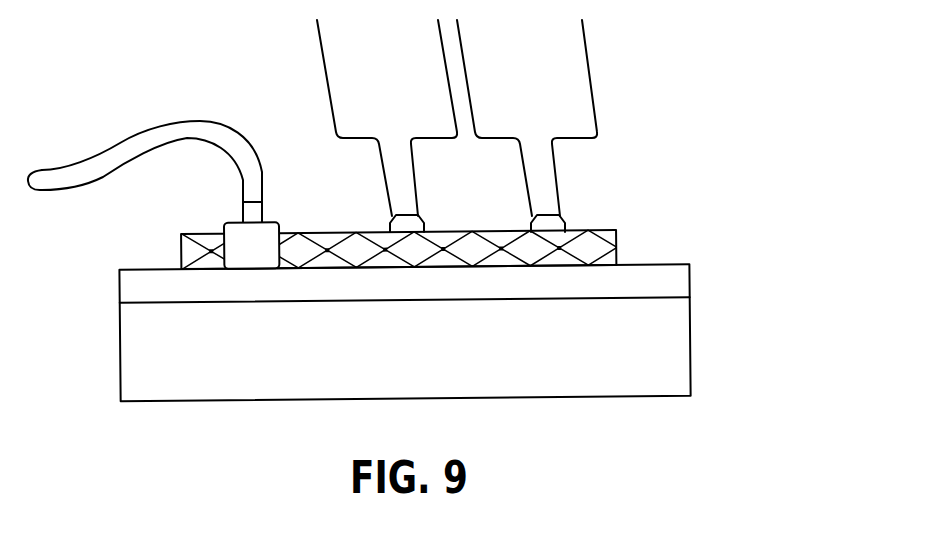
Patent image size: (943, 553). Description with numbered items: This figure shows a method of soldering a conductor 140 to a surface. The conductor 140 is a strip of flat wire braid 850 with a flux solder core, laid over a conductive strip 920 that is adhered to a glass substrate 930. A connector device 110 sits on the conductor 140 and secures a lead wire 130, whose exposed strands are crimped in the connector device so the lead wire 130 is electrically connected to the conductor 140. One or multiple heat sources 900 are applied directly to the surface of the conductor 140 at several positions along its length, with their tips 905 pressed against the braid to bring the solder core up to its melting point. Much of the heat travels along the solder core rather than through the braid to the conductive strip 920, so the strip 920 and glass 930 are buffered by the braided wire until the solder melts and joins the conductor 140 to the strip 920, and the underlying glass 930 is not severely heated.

The connector device 110 is at (238, 260).
The lead wire 130 is at (122, 151).
The conductor 140 is at (347, 257).
The flat wire braid 850 is at (617, 240).
The heat source 900 is at (328, 80).
The heat source tip 905 is at (590, 210).
The conductive strip 920 is at (685, 278).
The glass substrate 930 is at (673, 337).